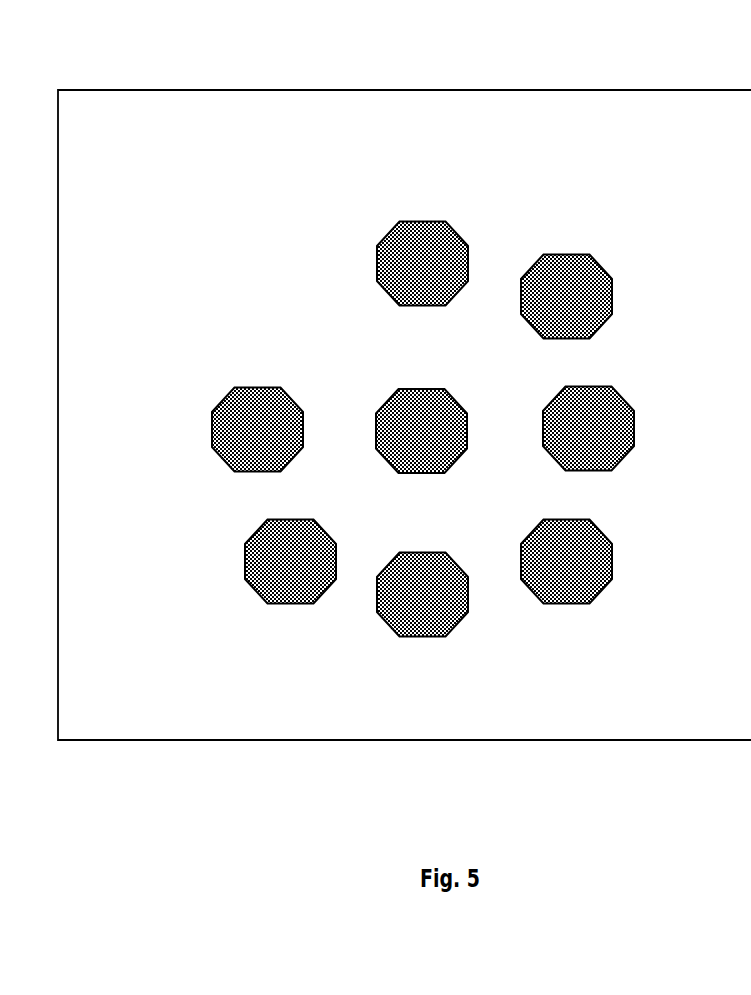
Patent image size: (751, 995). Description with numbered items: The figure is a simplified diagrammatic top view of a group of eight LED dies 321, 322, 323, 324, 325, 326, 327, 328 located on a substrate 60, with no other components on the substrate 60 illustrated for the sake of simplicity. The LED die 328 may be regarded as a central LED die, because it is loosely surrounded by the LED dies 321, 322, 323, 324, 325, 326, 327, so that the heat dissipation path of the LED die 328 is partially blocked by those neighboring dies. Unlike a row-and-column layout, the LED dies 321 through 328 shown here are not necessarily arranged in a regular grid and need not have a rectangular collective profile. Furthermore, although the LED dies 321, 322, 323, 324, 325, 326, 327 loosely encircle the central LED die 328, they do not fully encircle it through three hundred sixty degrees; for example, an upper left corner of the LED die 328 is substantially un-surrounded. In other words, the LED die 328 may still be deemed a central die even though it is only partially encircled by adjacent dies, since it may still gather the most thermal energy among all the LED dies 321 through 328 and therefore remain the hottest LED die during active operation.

The substrate 60 is at (698, 90).
The LED die 321 is at (226, 460).
The LED die 322 is at (258, 592).
The LED die 323 is at (390, 626).
The LED die 324 is at (534, 592).
The LED die 325 is at (556, 460).
The LED die 326 is at (534, 328).
The LED die 327 is at (390, 294).
The central LED die 328 is at (390, 462).